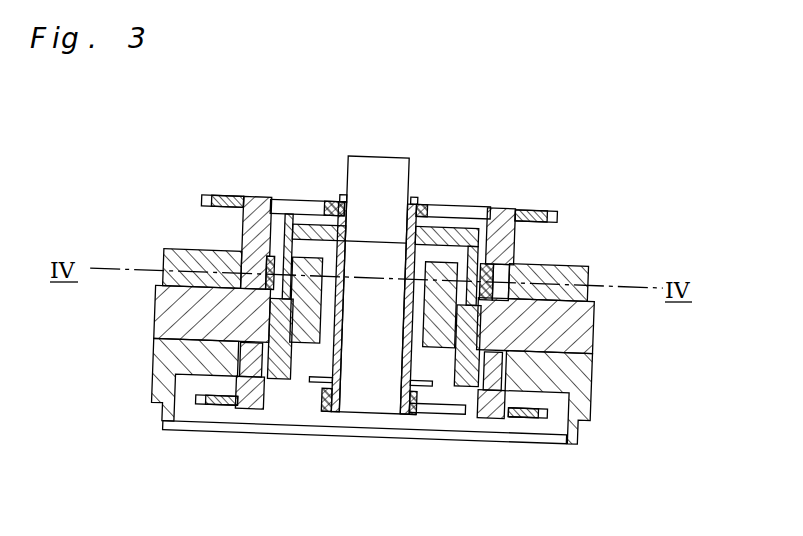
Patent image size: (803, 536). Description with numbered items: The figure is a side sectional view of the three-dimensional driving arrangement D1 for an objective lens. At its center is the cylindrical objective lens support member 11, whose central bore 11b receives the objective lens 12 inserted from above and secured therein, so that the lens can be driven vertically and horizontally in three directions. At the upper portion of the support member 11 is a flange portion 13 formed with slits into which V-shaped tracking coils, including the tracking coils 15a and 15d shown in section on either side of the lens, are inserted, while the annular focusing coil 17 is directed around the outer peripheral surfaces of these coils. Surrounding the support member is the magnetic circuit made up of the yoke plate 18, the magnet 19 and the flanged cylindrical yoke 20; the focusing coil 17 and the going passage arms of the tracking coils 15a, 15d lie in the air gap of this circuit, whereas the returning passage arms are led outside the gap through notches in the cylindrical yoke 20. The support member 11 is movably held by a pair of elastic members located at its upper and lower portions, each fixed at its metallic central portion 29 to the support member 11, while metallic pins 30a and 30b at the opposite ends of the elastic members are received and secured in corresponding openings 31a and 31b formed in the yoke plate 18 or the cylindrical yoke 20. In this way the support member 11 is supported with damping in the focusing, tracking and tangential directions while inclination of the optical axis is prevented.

The objective lens support member 11 is at (415, 200).
The central bore 11b is at (373, 377).
The objective lens 12 is at (397, 157).
The flange portion 13 is at (458, 203).
The tracking coil 15a is at (290, 198).
The tracking coil 15d is at (480, 203).
The focusing coil 17 is at (282, 198).
The yoke plate 18 is at (163, 250).
The magnet 19 is at (177, 322).
The flanged cylindrical yoke 20 is at (165, 383).
The central portion 29 is at (335, 197).
The pin 30a is at (212, 198).
The pin 30b is at (512, 205).
The opening 31a is at (240, 260).
The opening 31b is at (513, 267).
The three-dimensional driving arrangement D1 is at (588, 122).